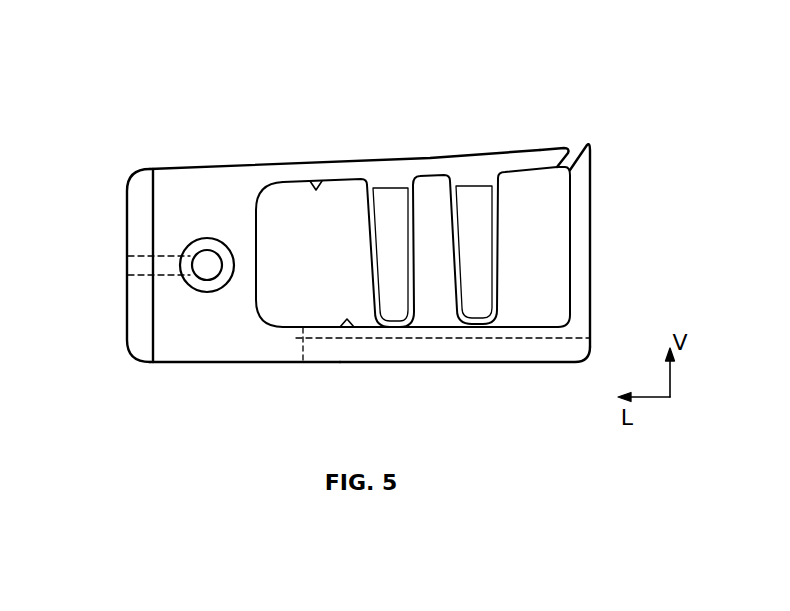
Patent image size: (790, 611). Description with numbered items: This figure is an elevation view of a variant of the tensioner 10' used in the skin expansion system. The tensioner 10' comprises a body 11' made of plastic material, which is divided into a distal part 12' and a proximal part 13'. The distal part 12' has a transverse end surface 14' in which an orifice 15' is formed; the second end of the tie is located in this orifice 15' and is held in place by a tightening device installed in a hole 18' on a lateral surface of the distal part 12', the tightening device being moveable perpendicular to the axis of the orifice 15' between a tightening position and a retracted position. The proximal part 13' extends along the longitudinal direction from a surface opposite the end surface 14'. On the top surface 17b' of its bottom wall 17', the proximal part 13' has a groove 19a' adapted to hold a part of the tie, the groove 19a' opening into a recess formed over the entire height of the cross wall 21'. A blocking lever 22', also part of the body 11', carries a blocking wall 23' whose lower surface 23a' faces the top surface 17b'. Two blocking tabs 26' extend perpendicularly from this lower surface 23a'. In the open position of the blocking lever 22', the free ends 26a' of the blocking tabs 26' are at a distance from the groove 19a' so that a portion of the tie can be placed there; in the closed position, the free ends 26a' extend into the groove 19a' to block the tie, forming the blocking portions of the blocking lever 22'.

The tensioner 10' is at (361, 253).
The body 11' is at (217, 417).
The distal part 12' is at (345, 128).
The proximal part 13' is at (465, 400).
The transverse end surface 14' is at (106, 265).
The orifice 15' is at (147, 265).
The bottom wall 17' is at (420, 376).
The top surface 17b' is at (325, 372).
The hole 18' is at (193, 337).
The groove 19a' is at (442, 379).
The cross wall 21' is at (609, 245).
The blocking lever 22' is at (547, 116).
The blocking wall 23' is at (311, 219).
The lower surface 23a' is at (299, 151).
The blocking tabs 26' is at (514, 245).
The free ends 26a' is at (432, 305).